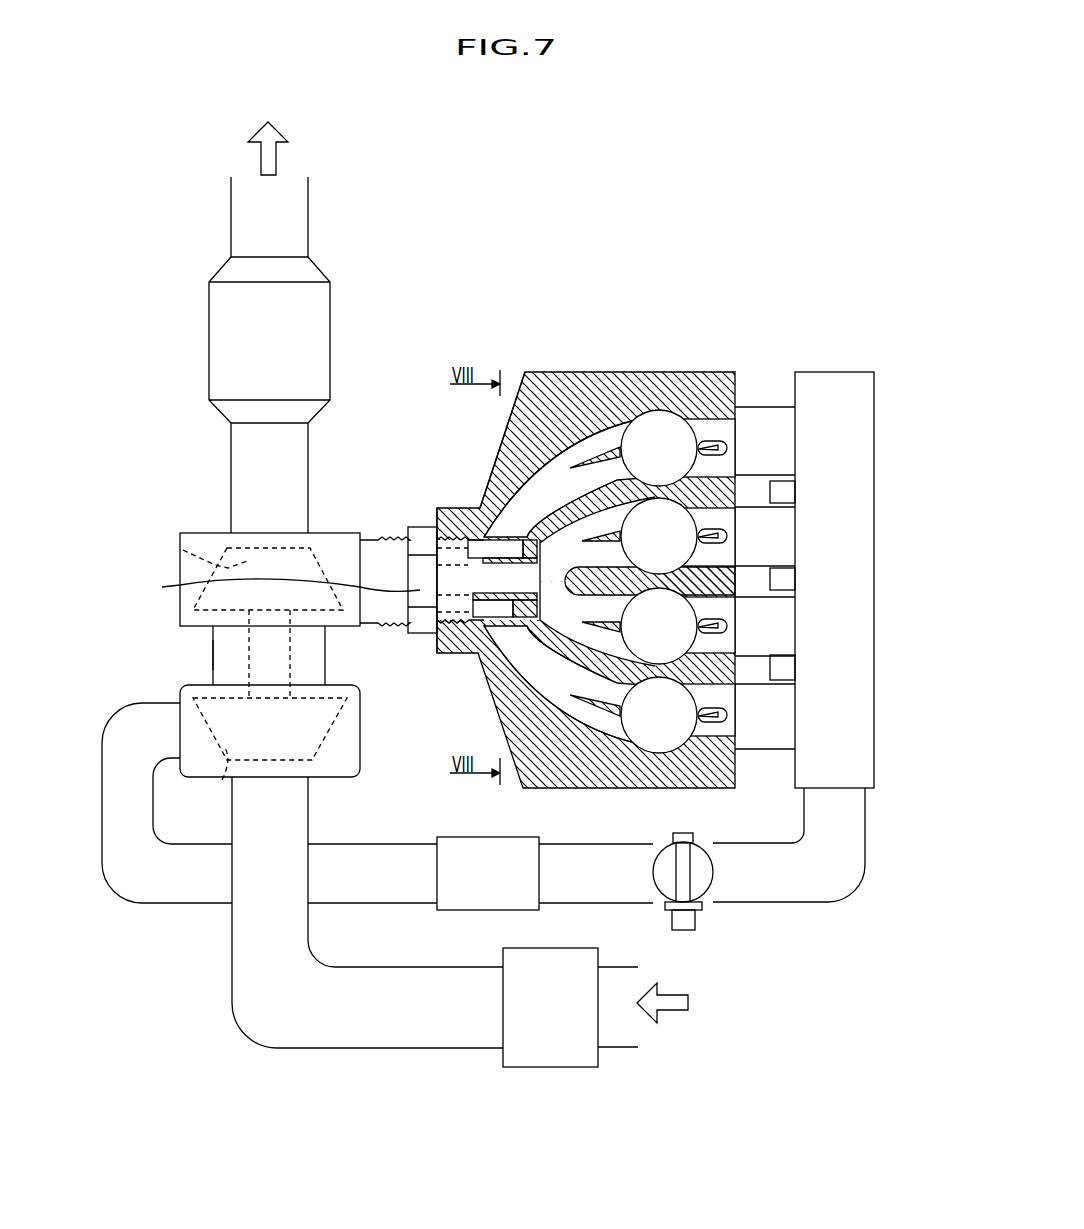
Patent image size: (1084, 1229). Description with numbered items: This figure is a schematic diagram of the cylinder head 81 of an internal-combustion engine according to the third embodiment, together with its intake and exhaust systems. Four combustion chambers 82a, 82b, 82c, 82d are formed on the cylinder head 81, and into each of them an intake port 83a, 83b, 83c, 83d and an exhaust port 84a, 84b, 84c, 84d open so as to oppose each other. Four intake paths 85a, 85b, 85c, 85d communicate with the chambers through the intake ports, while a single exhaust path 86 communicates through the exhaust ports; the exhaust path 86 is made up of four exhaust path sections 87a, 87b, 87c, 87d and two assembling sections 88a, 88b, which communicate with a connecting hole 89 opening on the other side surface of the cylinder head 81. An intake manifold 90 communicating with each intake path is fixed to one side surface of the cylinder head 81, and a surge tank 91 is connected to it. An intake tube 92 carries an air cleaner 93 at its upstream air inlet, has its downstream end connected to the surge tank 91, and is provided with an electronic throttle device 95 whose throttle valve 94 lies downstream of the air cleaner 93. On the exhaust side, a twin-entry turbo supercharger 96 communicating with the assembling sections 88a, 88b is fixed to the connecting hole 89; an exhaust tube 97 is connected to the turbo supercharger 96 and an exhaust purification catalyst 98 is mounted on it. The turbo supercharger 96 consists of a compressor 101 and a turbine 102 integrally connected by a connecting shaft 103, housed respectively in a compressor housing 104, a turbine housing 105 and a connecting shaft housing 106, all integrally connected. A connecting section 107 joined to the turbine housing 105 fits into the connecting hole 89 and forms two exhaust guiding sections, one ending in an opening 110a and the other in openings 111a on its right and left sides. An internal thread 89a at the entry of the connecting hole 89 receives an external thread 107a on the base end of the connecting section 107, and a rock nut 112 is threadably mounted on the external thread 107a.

The cylinder head 81 is at (713, 360).
The combustion chamber 82a is at (643, 450).
The combustion chamber 82b is at (663, 563).
The combustion chamber 82c is at (647, 740).
The combustion chamber 82d is at (630, 757).
The intake port 83a is at (605, 430).
The intake port 83b is at (565, 453).
The intake port 83c is at (547, 700).
The intake port 83d is at (575, 700).
The exhaust port 84a is at (709, 430).
The exhaust port 84b is at (713, 464).
The exhaust port 84c is at (709, 643).
The exhaust port 84d is at (711, 699).
The intake path 85a is at (739, 447).
The intake path 85b is at (739, 547).
The intake path 85c is at (739, 601).
The intake path 85d is at (739, 712).
The exhaust path 86 is at (522, 378).
The exhaust path section 87a is at (507, 417).
The exhaust path section 87b is at (546, 483).
The exhaust path section 87c is at (500, 713).
The exhaust path section 87d is at (513, 670).
The assembling section 88a is at (502, 460).
The assembling section 88b is at (420, 540).
The connecting hole 89 is at (412, 623).
The internal thread 89a is at (437, 640).
The intake manifold 90 is at (778, 517).
The surge tank 91 is at (865, 436).
The intake tube 92 is at (323, 1042).
The air cleaner 93 is at (552, 1057).
The throttle valve 94 is at (700, 875).
The electronic throttle device 95 is at (687, 925).
The turbo supercharger 96 is at (150, 662).
The exhaust tube 97 is at (237, 470).
The exhaust purification catalyst 98 is at (222, 327).
The compressor 101 is at (222, 780).
The turbine 102 is at (183, 550).
The connecting shaft 103 is at (260, 650).
The compressor housing 104 is at (180, 698).
The turbine housing 105 is at (193, 538).
The connecting shaft housing 106 is at (223, 642).
The connecting section 107 is at (512, 478).
The external thread 107a is at (432, 543).
The opening 110a is at (264, 587).
The opening 111a is at (470, 540).
The rock nut 112 is at (360, 562).